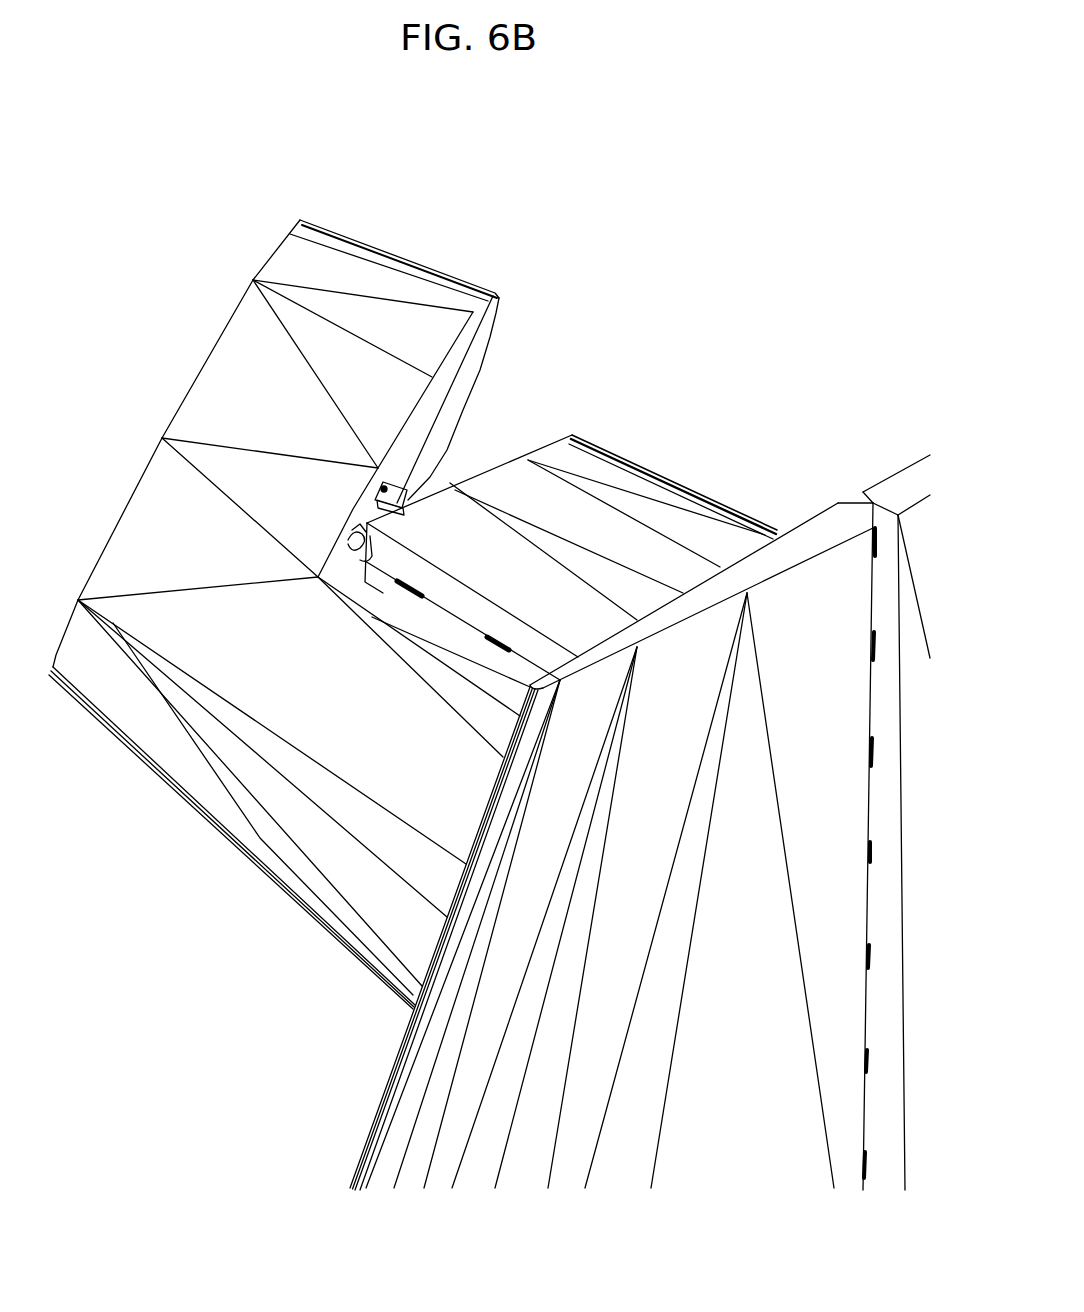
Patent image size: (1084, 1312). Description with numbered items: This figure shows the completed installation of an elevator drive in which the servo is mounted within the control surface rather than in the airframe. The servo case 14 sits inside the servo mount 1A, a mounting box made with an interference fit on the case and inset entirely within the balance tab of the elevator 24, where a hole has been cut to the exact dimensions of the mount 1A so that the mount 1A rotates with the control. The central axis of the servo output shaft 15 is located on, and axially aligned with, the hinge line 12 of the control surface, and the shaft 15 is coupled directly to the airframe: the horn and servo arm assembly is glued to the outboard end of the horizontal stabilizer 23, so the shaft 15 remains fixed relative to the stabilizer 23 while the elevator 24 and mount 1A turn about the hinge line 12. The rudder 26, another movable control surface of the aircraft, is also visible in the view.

The servo mount 1A is at (413, 497).
The hinge line 12 is at (572, 435).
The servo case 14 is at (448, 613).
The servo output shaft 15 is at (345, 535).
The horizontal stabilizer 23 is at (608, 537).
The elevator 24 is at (362, 272).
The rudder 26 is at (425, 1102).